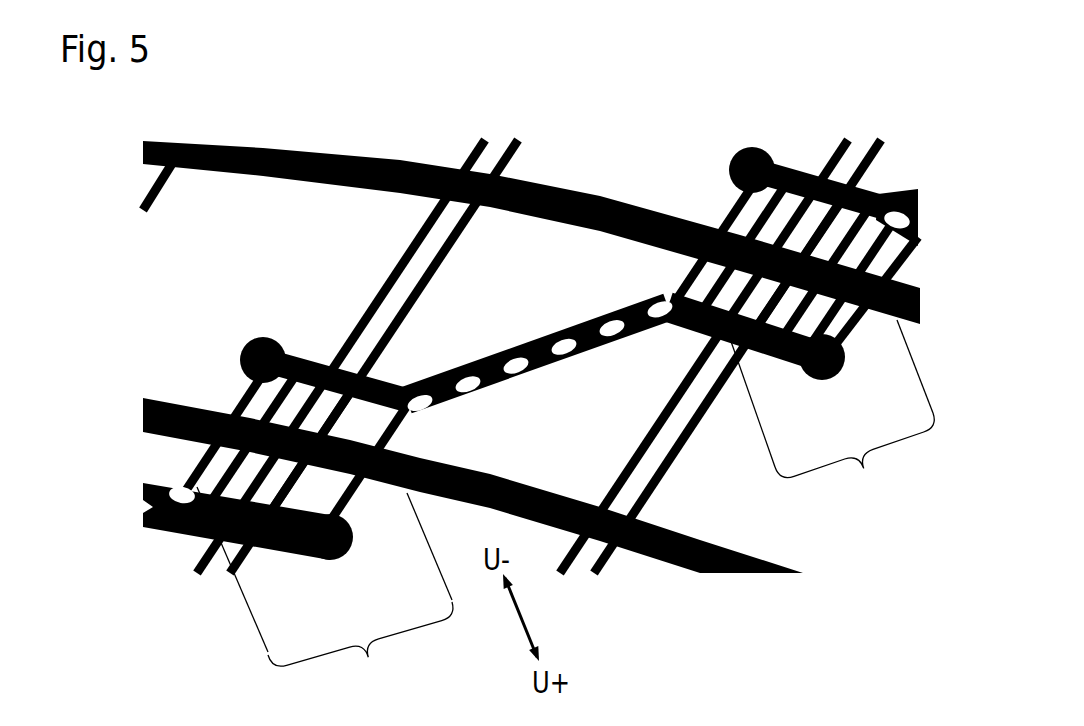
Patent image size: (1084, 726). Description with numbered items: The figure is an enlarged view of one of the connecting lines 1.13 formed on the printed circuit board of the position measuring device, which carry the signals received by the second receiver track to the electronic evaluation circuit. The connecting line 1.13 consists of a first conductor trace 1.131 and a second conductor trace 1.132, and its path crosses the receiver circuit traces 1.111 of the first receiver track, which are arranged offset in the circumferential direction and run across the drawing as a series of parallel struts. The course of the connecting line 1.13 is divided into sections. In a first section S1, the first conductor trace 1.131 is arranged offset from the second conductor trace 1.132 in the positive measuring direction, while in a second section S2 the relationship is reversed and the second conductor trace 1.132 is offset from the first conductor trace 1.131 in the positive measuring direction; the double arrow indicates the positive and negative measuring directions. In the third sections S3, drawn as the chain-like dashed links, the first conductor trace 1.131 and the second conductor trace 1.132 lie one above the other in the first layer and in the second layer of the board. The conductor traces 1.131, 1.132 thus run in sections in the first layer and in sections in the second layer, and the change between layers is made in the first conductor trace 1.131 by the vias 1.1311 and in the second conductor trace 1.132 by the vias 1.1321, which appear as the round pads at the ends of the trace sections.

The receiver circuit trace 1.111 is at (663, 430).
The connecting line 1.13 is at (148, 528).
The first conductor trace 1.131 is at (395, 430).
The via 1.1311 is at (347, 553).
The second conductor trace 1.132 is at (352, 352).
The via 1.1321 is at (246, 337).
The first section S1 is at (325, 595).
The second section S2 is at (830, 419).
The third section S3 is at (210, 473).